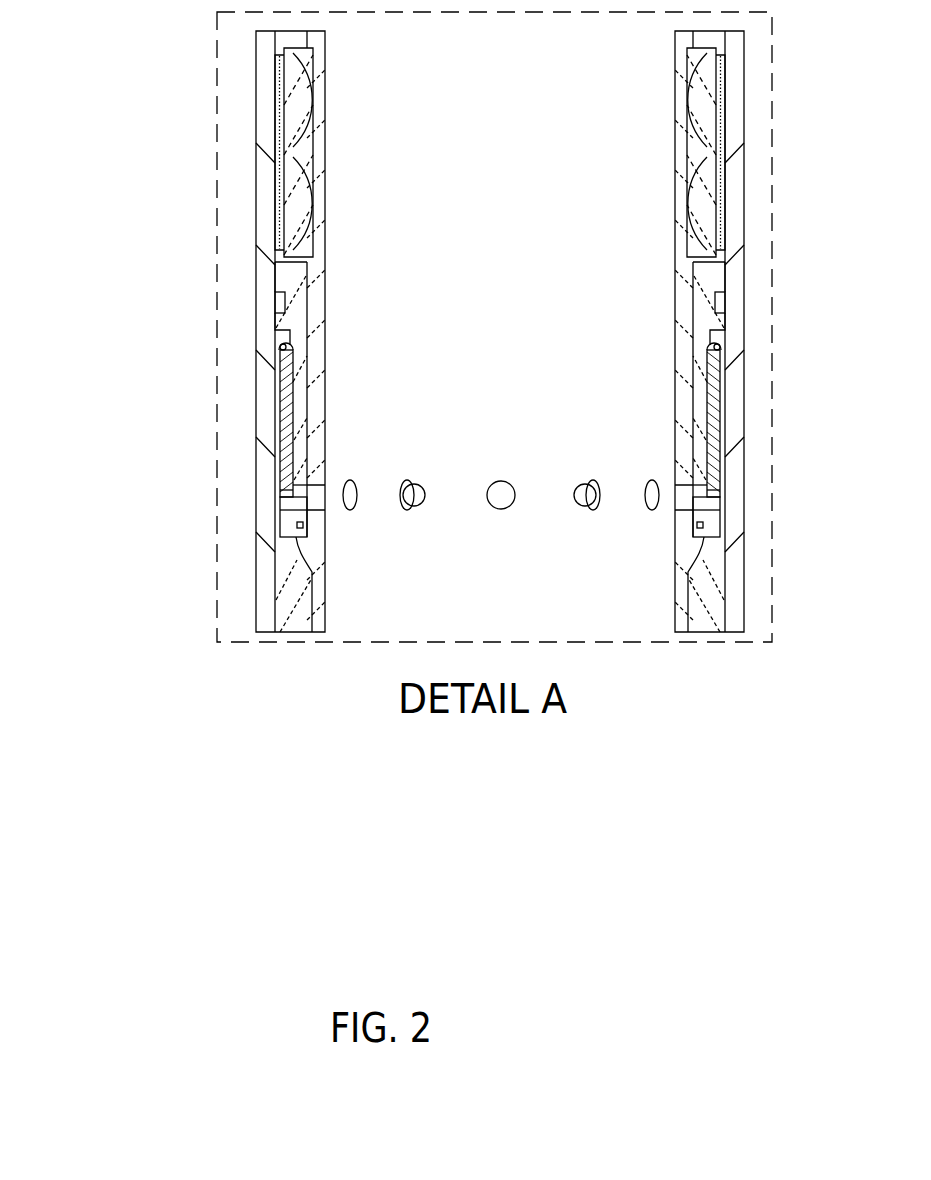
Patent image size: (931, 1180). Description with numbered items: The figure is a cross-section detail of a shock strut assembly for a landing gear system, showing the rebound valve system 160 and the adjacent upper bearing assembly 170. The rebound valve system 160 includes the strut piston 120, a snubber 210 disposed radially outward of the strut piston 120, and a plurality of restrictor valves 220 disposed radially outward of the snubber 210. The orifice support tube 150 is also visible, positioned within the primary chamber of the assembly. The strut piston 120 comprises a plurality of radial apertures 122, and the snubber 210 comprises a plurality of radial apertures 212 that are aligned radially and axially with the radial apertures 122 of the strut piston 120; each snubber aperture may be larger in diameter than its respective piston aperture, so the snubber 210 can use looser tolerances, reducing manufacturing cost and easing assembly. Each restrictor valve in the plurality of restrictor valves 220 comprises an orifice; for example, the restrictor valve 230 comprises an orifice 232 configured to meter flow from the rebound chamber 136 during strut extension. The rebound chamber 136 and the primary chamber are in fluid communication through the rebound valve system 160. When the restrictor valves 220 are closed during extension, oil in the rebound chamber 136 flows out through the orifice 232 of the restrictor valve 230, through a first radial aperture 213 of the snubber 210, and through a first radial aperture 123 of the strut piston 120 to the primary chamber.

The strut piston 120 is at (320, 365).
The plurality of radial apertures 122 is at (350, 500).
The first radial aperture 123 is at (305, 484).
The rebound chamber 136 is at (290, 607).
The orifice support tube 150 is at (268, 308).
The rebound valve system 160 is at (153, 150).
The upper bearing assembly 170 is at (273, 75).
The snubber 210 is at (277, 268).
The plurality of radial apertures 212 is at (290, 505).
The first radial aperture 213 is at (300, 480).
The plurality of restrictor valves 220 is at (290, 427).
The restrictor valve 230 is at (288, 380).
The orifice 232 is at (287, 490).